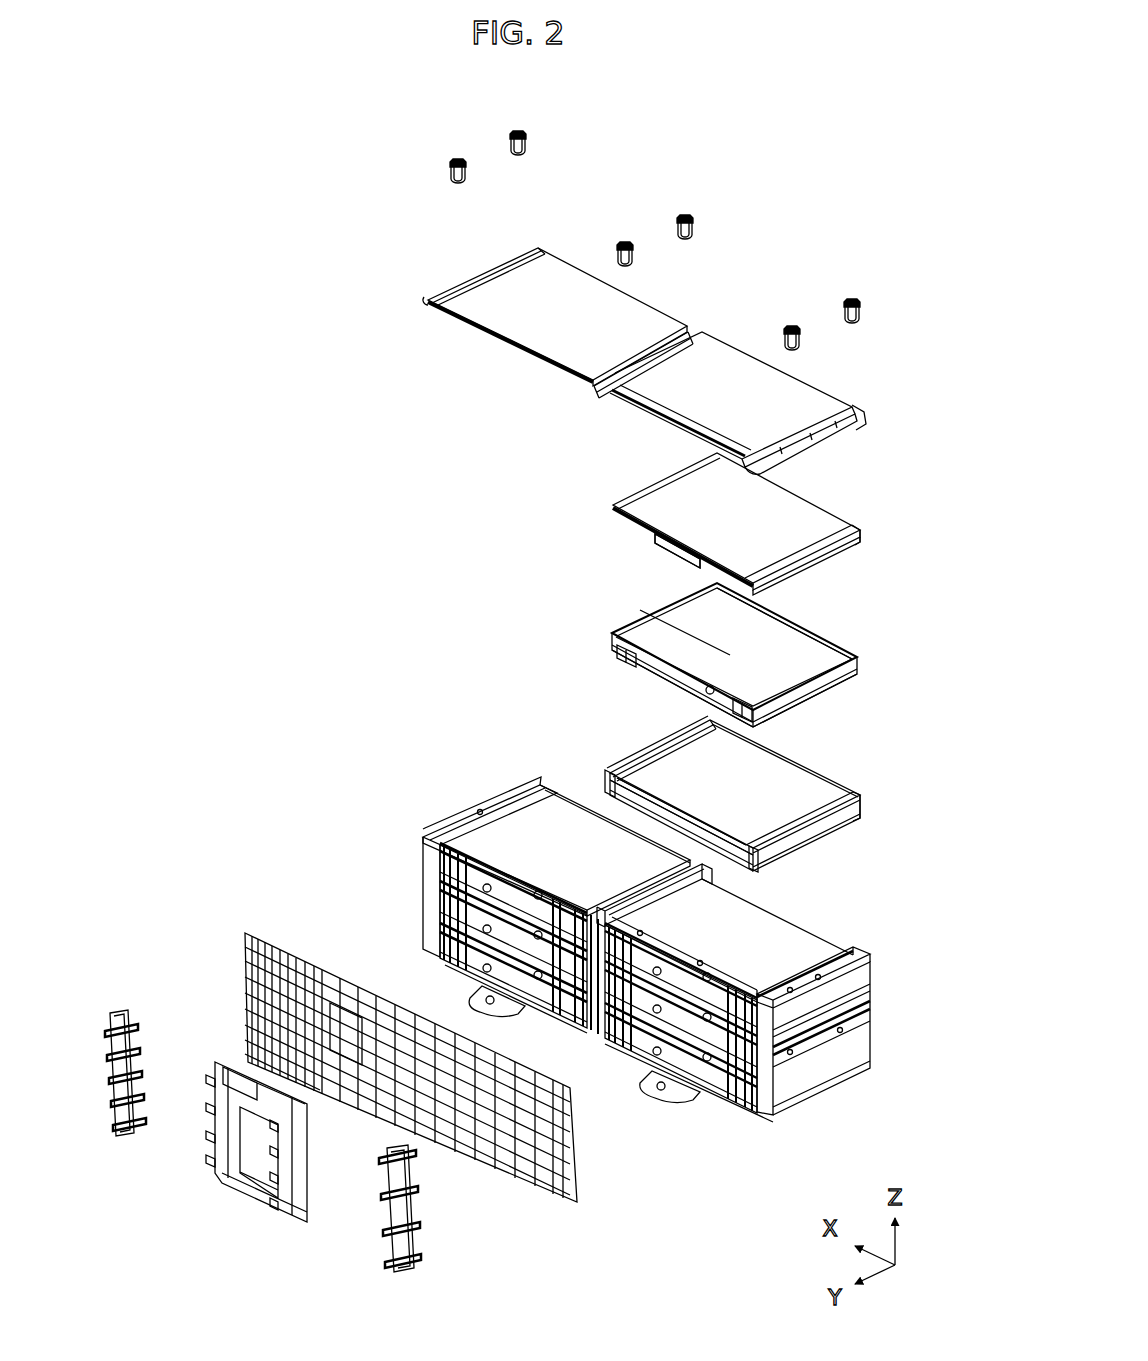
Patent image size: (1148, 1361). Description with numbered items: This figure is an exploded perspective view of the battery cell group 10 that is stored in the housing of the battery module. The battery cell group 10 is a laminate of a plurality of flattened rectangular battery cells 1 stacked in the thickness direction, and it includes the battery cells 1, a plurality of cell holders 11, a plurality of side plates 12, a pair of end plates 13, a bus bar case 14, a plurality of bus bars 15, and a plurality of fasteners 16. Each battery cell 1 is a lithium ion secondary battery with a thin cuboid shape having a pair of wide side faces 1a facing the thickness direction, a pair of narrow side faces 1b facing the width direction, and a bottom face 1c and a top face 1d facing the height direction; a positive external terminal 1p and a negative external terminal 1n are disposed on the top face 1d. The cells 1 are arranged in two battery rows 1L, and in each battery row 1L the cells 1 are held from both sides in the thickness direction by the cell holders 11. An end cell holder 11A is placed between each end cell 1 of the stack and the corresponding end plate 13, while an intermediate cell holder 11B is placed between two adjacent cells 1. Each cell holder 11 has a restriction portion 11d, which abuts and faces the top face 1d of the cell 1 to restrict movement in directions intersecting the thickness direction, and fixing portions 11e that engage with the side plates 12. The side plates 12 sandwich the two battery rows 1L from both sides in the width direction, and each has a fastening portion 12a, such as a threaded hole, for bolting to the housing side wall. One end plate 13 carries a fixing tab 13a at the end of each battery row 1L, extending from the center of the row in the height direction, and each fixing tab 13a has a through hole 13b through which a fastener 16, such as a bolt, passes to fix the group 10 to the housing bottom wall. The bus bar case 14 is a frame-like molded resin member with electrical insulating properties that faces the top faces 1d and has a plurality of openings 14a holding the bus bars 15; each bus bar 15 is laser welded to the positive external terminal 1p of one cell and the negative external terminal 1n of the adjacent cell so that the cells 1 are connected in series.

The battery cell group 10 is at (806, 158).
The fastener 16 is at (456, 158).
The end plate 13 is at (722, 362).
The fixing tab 13a is at (518, 1012).
The through hole 13b is at (482, 993).
The cell holder 11 is at (678, 640).
The end cell holder 11A is at (648, 468).
The intermediate cell holder 11B is at (632, 740).
The restriction portion 11d is at (660, 548).
The fixing portion 11e is at (872, 533).
The battery cell 1 is at (707, 656).
The wide side face 1a is at (683, 620).
The narrow side face 1b is at (830, 681).
The bottom face 1c is at (820, 636).
The top face 1d is at (665, 670).
The negative external terminal 1n is at (615, 656).
The positive external terminal 1p is at (740, 717).
The battery row 1L is at (460, 822).
The side plate 12 is at (430, 831).
The fastening portion 12a is at (450, 826).
The bus bar case 14 is at (240, 898).
The opening 14a is at (300, 960).
The bus bar 15 is at (118, 1000).